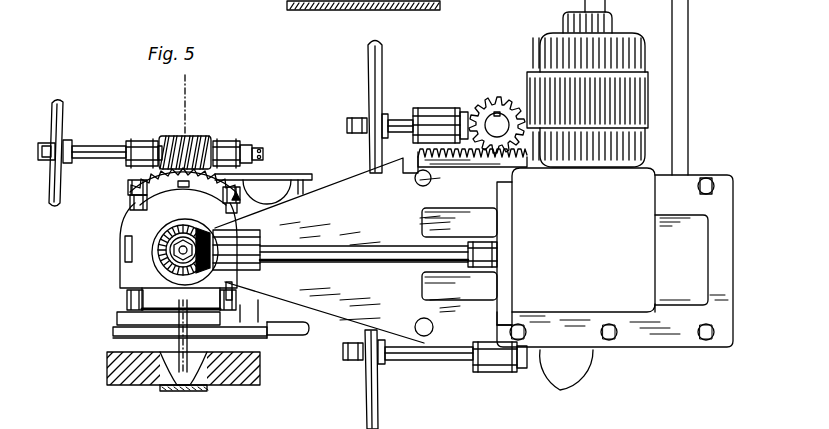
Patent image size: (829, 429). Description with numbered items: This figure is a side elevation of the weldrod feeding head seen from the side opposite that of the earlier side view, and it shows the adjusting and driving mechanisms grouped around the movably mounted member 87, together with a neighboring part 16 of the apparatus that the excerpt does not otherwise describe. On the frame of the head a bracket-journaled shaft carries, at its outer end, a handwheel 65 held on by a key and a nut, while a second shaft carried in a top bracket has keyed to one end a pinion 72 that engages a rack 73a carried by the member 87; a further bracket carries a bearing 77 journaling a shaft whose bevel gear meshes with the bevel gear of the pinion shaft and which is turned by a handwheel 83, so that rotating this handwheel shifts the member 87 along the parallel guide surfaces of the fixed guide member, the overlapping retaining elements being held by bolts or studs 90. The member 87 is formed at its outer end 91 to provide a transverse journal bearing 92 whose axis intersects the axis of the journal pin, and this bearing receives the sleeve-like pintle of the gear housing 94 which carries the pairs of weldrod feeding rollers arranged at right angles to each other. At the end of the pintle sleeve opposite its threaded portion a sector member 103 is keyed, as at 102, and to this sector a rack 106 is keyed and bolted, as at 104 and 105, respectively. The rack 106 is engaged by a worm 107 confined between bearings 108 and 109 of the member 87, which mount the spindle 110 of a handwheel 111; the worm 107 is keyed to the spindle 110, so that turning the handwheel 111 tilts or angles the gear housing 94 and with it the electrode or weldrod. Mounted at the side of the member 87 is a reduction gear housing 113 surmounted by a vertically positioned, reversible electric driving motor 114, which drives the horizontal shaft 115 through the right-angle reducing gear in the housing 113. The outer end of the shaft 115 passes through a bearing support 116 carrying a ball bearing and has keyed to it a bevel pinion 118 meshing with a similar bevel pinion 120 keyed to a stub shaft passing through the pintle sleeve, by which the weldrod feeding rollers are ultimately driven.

The standard column 16 is at (688, 28).
The handwheel 65 is at (378, 405).
The pinion 72 is at (495, 98).
The rack 73a is at (474, 158).
The bearing 77 is at (434, 118).
The handwheel 83 is at (380, 62).
The movably mounted member 87 is at (342, 188).
The bolts or studs 90 is at (421, 186).
The outer end 91 is at (265, 283).
The transverse journal bearing 92 is at (200, 268).
The gear housing 94 is at (280, 312).
The key 102 is at (166, 257).
The sector member 103 is at (157, 210).
The key 104 is at (184, 187).
The bolts 105 is at (130, 185).
The rack 106 is at (137, 197).
The worm 107 is at (192, 135).
The bearing 108 is at (145, 140).
The bearing 109 is at (230, 140).
The spindle 110 is at (83, 143).
The handwheel 111 is at (61, 100).
The reduction gear housing 113 is at (602, 229).
The electric driving motor 114 is at (540, 32).
The horizontal shaft 115 is at (313, 247).
The bearing support 116 is at (262, 231).
The bevel pinion 118 is at (203, 265).
The bevel pinion 120 is at (203, 267).